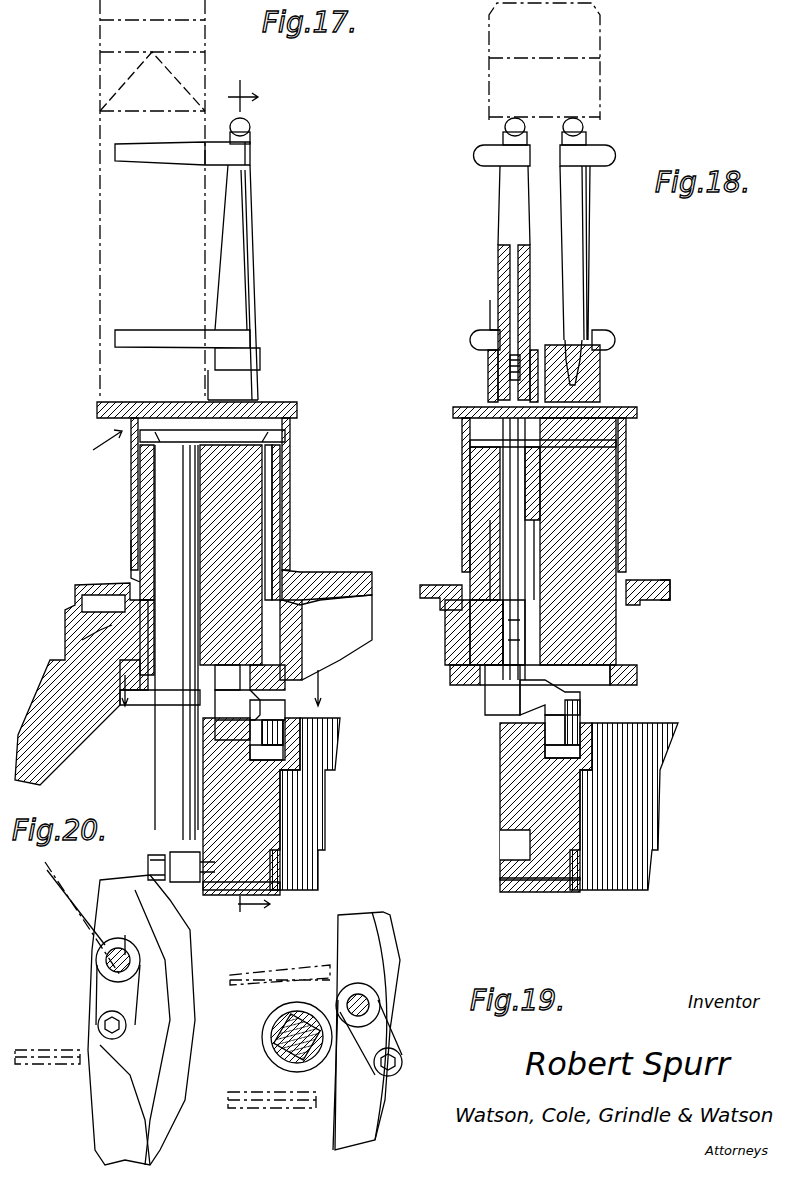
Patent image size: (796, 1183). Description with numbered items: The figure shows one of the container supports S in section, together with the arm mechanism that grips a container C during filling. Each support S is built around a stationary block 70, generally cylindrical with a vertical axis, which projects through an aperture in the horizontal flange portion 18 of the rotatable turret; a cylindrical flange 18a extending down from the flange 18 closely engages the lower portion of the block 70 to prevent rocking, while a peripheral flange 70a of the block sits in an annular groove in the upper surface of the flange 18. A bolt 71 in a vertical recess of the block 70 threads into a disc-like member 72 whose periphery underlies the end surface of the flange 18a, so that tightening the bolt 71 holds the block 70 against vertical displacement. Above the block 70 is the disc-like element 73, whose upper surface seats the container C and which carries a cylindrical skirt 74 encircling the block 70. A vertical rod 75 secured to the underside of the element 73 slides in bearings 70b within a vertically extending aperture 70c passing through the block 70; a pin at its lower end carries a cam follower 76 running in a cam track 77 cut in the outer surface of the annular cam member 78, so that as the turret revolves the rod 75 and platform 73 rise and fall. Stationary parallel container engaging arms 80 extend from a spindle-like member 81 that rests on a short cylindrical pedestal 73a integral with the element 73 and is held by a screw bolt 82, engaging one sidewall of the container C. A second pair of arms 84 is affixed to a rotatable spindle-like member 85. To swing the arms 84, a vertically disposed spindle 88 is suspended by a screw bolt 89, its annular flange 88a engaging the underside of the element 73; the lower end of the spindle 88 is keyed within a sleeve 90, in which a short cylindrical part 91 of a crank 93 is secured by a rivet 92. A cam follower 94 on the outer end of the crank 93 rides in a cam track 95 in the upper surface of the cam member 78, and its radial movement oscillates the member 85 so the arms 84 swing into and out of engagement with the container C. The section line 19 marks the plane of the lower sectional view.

In FIG. 17, the container C is at (100, 200).
In FIG. 17, the container support S is at (106, 450).
In FIG. 17, the horizontal flange portion 18 is at (82, 583).
In FIG. 18, the horizontal flange portion 18 is at (666, 590).
In FIG. 17, the cylindrical flange 18a is at (302, 635).
In FIG. 17, the section line 19 is at (224, 689).
In FIG. 17, the stationary block 70 is at (250, 500).
In FIG. 18, the stationary block 70 is at (600, 493).
In FIG. 17, the peripheral flange 70a is at (290, 580).
In FIG. 18, the peripheral flange 70a is at (626, 580).
In FIG. 17, the bearings 70b is at (133, 480).
In FIG. 17, the cylindrical vertically extending aperture 70c is at (135, 548).
In FIG. 17, the bolt 71 is at (272, 513).
In FIG. 17, the disc-like member 72 is at (290, 688).
In FIG. 18, the disc-like member 72 is at (640, 676).
In FIG. 17, the disc-like element 73 is at (297, 408).
In FIG. 18, the disc-like element 73 is at (637, 412).
In FIG. 18, the cylindrical pedestal 73a is at (604, 392).
In FIG. 17, the cylindrical skirt 74 is at (290, 468).
In FIG. 18, the cylindrical skirt 74 is at (626, 516).
In FIG. 17, the rod 75 is at (175, 538).
In FIG. 19, the rod 75 is at (265, 1022).
In FIG. 17, the cam follower 76 is at (200, 880).
In FIG. 17, the cam track 77 is at (220, 892).
In FIG. 18, the cam track 77 is at (522, 866).
In FIG. 17, the annular cam member 78 is at (278, 805).
In FIG. 18, the annular cam member 78 is at (510, 802).
In FIG. 20, the annular cam member 78 is at (165, 1025).
In FIG. 19, the annular cam member 78 is at (365, 915).
In FIG. 18, the container engaging arms 80 is at (610, 156).
In FIG. 20, the container engaging arms 80 is at (32, 1060).
In FIG. 19, the container engaging arms 80 is at (260, 1102).
In FIG. 18, the spindle-like member 81 is at (588, 258).
In FIG. 18, the screw bolt 82 is at (592, 302).
In FIG. 17, the container engaging arms 84 is at (115, 150).
In FIG. 18, the container engaging arms 84 is at (474, 156).
In FIG. 20, the container engaging arms 84 is at (60, 880).
In FIG. 19, the container engaging arms 84 is at (272, 965).
In FIG. 17, the spindle-like member 85 is at (240, 276).
In FIG. 18, the spindle-like member 85 is at (518, 208).
In FIG. 18, the spindle 88 is at (510, 487).
In FIG. 18, the annular flange 88a is at (478, 470).
In FIG. 18, the screw bolt 89 is at (510, 272).
In FIG. 18, the sleeve 90 is at (500, 532).
In FIG. 18, the cylindrical part 91 is at (505, 622).
In FIG. 20, the cylindrical part 91 is at (105, 962).
In FIG. 19, the cylindrical part 91 is at (370, 990).
In FIG. 18, the rivet 92 is at (478, 696).
In FIG. 17, the crank 93 is at (230, 703).
In FIG. 18, the crank 93 is at (495, 712).
In FIG. 20, the crank 93 is at (130, 985).
In FIG. 19, the crank 93 is at (380, 1025).
In FIG. 17, the cam follower 94 is at (283, 728).
In FIG. 18, the cam follower 94 is at (568, 730).
In FIG. 20, the cam follower 94 is at (98, 1025).
In FIG. 19, the cam follower 94 is at (400, 1058).
In FIG. 17, the cam track 95 is at (290, 743).
In FIG. 18, the cam track 95 is at (560, 750).
In FIG. 20, the cam track 95 is at (128, 1075).
In FIG. 19, the cam track 95 is at (402, 925).